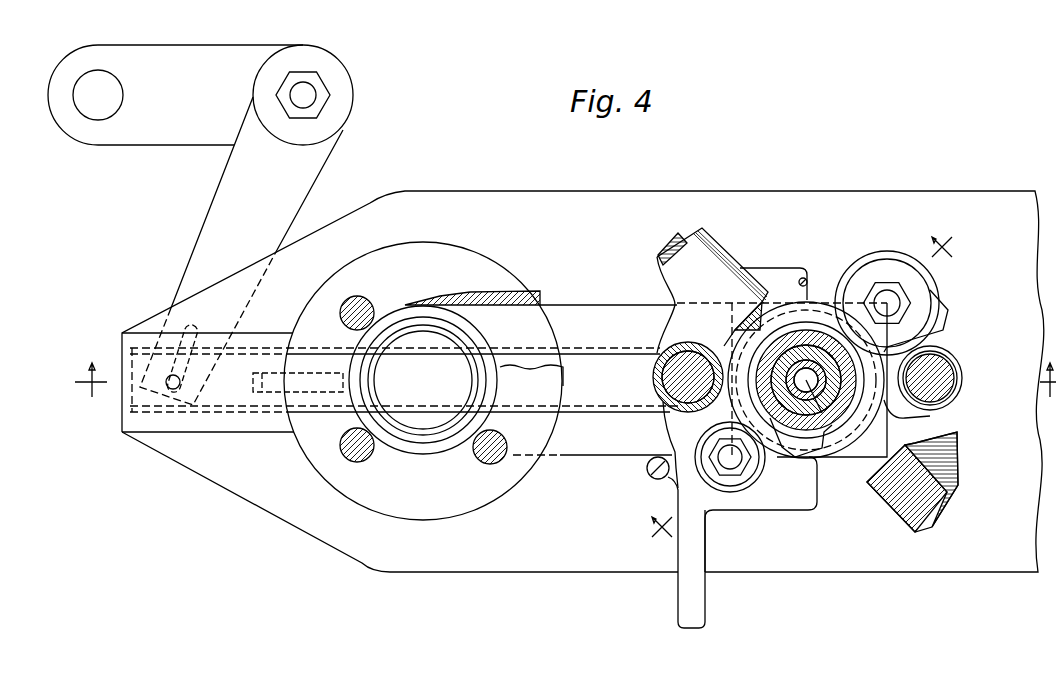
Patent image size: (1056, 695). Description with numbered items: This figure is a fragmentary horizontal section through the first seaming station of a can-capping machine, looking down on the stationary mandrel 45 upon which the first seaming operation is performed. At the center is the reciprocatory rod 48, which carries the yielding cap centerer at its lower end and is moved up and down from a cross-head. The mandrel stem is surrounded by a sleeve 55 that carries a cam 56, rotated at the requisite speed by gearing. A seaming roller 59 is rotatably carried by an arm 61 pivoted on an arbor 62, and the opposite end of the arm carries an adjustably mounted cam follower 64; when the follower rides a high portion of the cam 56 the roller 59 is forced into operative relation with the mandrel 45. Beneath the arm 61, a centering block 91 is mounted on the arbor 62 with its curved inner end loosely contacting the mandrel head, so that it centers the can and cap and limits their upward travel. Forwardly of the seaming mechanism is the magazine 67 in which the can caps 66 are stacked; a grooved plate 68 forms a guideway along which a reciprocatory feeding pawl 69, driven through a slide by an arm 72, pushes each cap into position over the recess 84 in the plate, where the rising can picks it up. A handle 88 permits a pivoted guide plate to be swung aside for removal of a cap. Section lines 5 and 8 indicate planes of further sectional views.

The arm 72 is at (213, 204).
The magazine 67 is at (490, 268).
The can caps 66 is at (423, 380).
The feeding pawl 69 is at (313, 386).
The cam follower 64 is at (760, 300).
The centering block 91 is at (748, 318).
The arbor 62 is at (653, 377).
The cam 56 is at (822, 305).
The seaming roller 59 is at (890, 257).
The arm 61 is at (936, 306).
The sleeve 55 is at (785, 450).
The mandrel 45 is at (851, 428).
The reciprocatory rod 48 is at (826, 440).
The recess 84 is at (886, 434).
The handle 88 is at (705, 592).
The grooved plate 68 is at (943, 565).
The section line 5 is at (564, 385).
The section line 8 is at (807, 396).